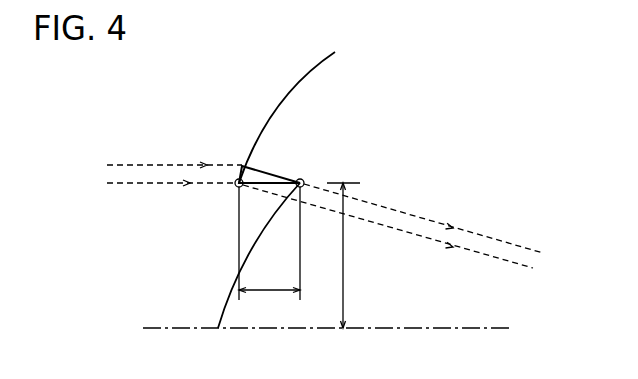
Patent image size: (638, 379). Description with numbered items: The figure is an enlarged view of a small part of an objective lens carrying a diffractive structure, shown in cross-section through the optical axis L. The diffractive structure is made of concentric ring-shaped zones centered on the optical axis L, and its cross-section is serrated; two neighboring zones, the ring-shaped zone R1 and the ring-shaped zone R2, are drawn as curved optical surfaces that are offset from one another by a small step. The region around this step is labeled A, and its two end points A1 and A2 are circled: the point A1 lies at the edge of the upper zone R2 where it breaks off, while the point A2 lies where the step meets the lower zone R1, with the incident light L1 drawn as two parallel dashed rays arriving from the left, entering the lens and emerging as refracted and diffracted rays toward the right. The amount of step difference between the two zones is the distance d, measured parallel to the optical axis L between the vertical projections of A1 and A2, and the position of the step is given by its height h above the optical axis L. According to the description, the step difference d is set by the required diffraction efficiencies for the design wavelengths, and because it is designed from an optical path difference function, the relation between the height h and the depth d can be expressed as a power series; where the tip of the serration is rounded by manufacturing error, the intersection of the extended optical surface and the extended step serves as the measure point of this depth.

The ring-shaped zone R1 is at (247, 322).
The ring-shaped zone R2 is at (292, 108).
The medium A is at (264, 186).
The first edge point of step A1 is at (301, 178).
The second edge point of step A2 is at (234, 189).
The incident light ray L1 is at (135, 167).
The optical axis L is at (393, 330).
The height h is at (345, 255).
The step difference d is at (269, 300).